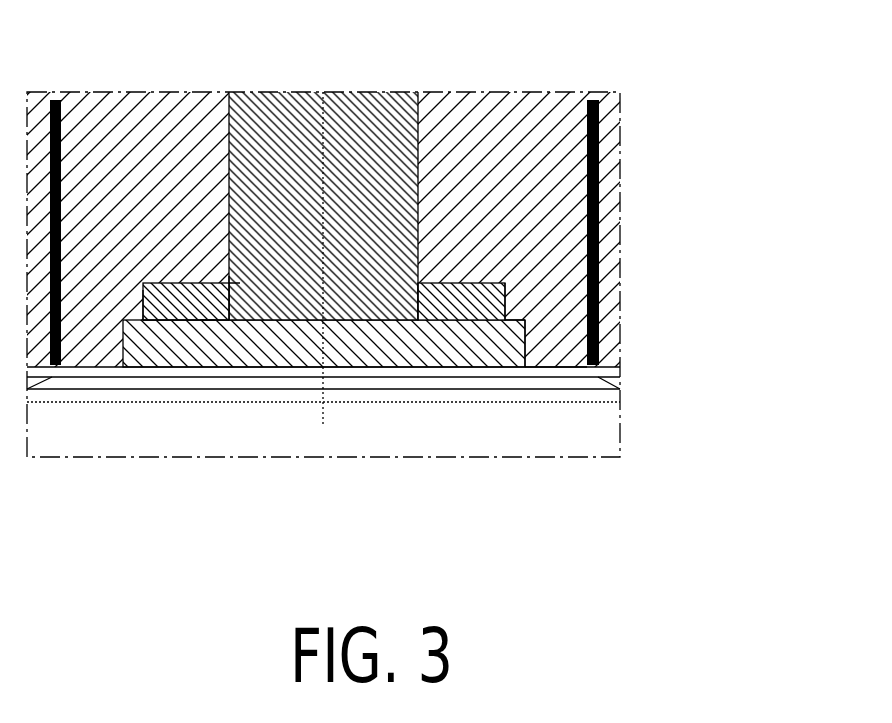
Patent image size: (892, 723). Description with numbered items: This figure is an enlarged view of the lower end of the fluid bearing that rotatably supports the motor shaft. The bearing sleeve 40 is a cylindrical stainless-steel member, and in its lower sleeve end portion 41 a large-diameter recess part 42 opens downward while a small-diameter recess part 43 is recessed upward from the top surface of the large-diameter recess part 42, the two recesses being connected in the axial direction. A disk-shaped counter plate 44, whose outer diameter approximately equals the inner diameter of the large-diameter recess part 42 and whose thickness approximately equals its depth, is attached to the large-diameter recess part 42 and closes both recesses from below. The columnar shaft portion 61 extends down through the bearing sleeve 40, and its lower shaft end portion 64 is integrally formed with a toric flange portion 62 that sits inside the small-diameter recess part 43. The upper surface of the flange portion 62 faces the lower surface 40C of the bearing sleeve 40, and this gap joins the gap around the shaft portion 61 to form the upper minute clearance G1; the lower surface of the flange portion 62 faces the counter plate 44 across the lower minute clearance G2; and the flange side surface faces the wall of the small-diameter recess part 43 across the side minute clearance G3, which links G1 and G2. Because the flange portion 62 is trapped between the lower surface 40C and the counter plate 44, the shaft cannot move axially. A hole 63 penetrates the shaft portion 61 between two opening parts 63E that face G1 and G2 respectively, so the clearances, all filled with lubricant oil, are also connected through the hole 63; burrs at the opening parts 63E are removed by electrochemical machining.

The bearing sleeve 40 is at (508, 108).
The lower surface of the bearing sleeve 40C is at (508, 302).
The sleeve end portion 41 is at (558, 325).
The large-diameter recess part 42 is at (527, 343).
The small-diameter recess part 43 is at (495, 312).
The counter plate 44 is at (370, 347).
The shaft portion 61 is at (372, 110).
The flange portion 62 is at (162, 305).
The hole 63 is at (236, 300).
The opening parts 63E is at (233, 287).
The shaft end portion 64 is at (300, 288).
The upper minute clearance G1 is at (205, 283).
The lower minute clearance G2 is at (207, 320).
The side minute clearance G3 is at (143, 298).